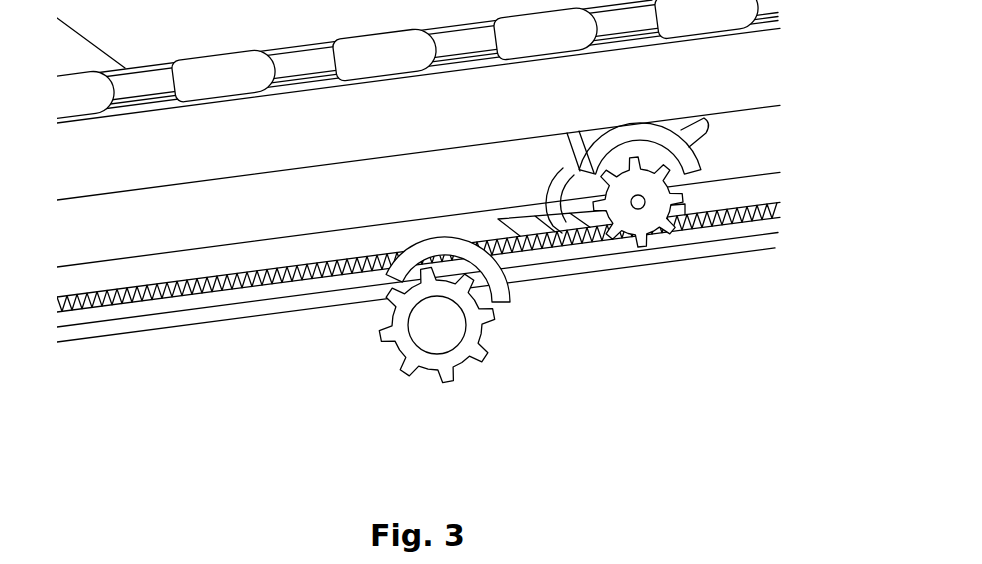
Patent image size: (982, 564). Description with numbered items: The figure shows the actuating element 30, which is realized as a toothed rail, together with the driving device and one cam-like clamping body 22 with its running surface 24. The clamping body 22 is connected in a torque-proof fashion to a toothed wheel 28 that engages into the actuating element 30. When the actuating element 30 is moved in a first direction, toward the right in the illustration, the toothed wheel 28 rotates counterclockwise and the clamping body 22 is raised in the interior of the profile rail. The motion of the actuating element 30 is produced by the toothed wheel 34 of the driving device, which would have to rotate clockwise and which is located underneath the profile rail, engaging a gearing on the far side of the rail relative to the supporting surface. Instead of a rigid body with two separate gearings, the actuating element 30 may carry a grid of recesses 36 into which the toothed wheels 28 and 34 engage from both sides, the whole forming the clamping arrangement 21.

The conveyor device 21 is at (588, 284).
The clamping body 22 is at (550, 189).
The running surface 24 is at (568, 166).
The toothed wheel 28 is at (700, 200).
The actuating element 30 is at (772, 222).
The toothed wheel 34 is at (441, 372).
The rack 36 is at (268, 272).